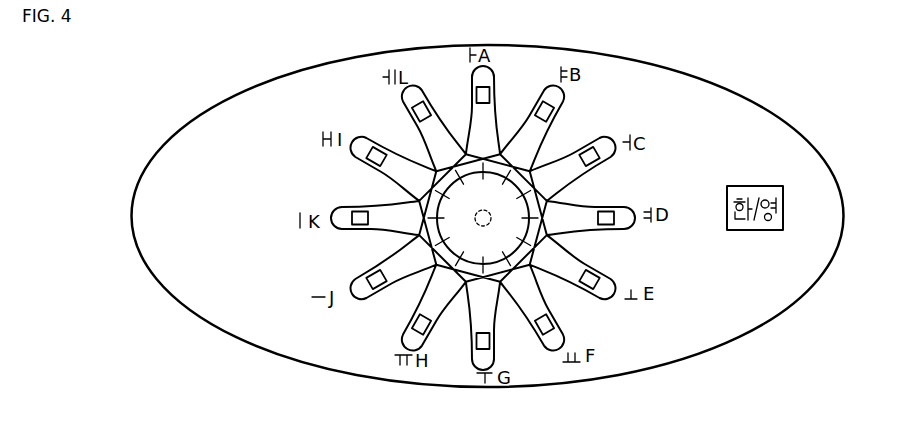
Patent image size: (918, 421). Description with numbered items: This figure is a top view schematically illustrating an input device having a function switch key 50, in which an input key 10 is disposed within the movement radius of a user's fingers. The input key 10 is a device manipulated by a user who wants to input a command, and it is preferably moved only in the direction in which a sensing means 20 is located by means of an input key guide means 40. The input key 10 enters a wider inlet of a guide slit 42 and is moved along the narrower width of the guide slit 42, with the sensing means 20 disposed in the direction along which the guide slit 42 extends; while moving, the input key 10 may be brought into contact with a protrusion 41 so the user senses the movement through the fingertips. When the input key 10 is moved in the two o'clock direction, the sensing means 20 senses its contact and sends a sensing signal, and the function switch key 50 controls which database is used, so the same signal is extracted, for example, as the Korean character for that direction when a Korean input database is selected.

The input key 10 is at (490, 217).
The sensing means 20 is at (558, 116).
The input key guide means 40 is at (438, 218).
The protrusion 41 is at (459, 218).
The guide slit 42 is at (385, 176).
The function switch key 50 is at (755, 230).